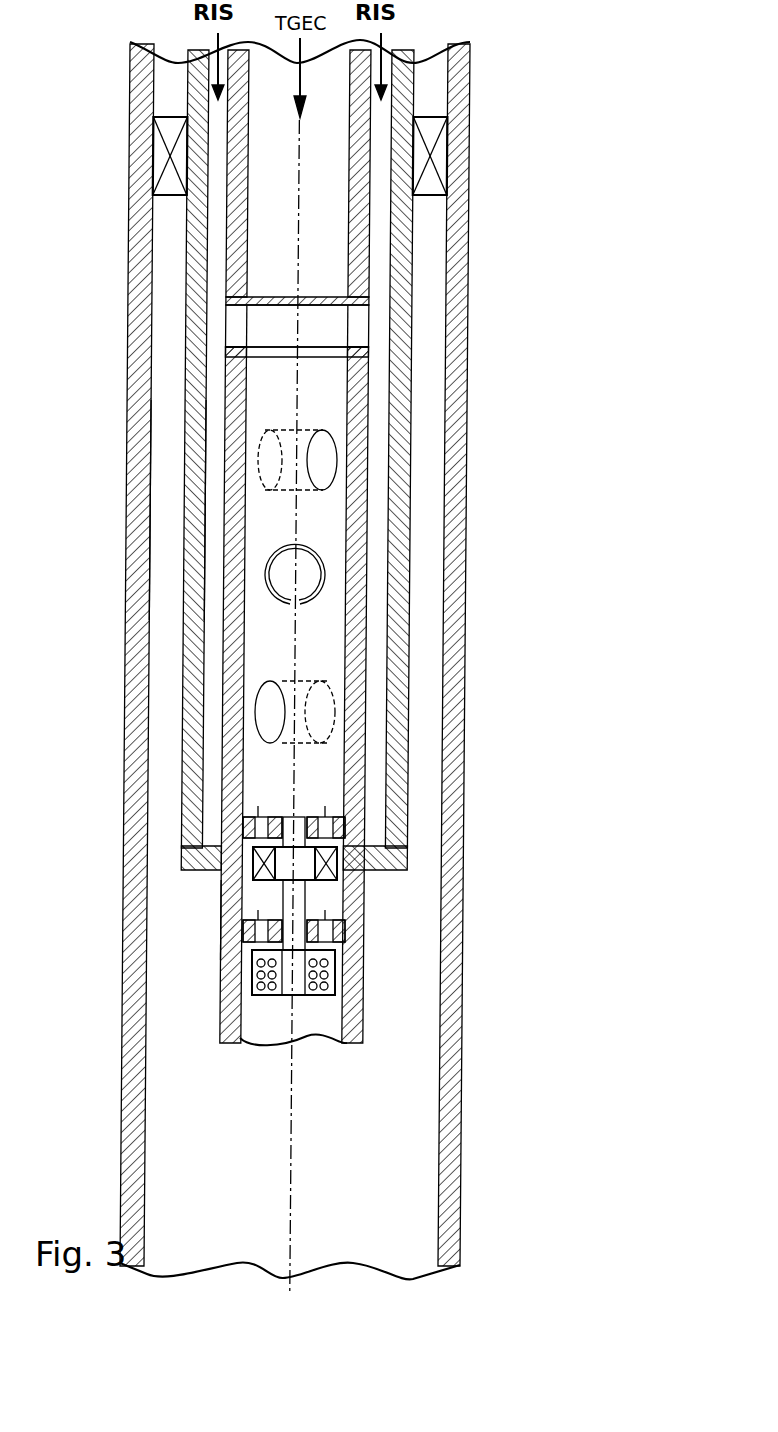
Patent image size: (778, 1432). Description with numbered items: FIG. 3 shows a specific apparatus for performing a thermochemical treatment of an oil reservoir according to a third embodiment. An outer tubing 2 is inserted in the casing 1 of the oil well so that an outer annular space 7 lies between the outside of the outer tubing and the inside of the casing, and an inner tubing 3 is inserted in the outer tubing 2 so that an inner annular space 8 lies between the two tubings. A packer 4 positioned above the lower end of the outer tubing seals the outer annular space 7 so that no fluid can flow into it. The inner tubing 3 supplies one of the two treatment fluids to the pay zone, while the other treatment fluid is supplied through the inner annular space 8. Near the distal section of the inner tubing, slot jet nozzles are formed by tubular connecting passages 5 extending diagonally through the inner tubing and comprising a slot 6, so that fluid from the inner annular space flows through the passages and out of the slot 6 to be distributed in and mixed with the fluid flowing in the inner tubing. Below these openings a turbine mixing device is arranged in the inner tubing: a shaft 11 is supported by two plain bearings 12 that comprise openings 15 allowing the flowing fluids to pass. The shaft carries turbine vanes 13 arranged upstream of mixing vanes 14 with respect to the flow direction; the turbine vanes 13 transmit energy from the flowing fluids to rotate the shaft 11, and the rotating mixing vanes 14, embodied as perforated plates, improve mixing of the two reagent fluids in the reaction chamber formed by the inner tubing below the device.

The casing 1 is at (448, 787).
The outer tubing 2 is at (192, 798).
The inner tubing 3 is at (228, 957).
The packer 4 is at (177, 163).
The tubular connecting passages 5 is at (273, 707).
The slot 6 is at (328, 362).
The outer annular space 7 is at (172, 512).
The inner annular space 8 is at (213, 465).
The shaft 11 is at (298, 815).
The plain bearings 12 is at (328, 935).
The turbine vanes 13 is at (232, 908).
The mixing vanes 14 is at (323, 977).
The openings 15 is at (328, 832).